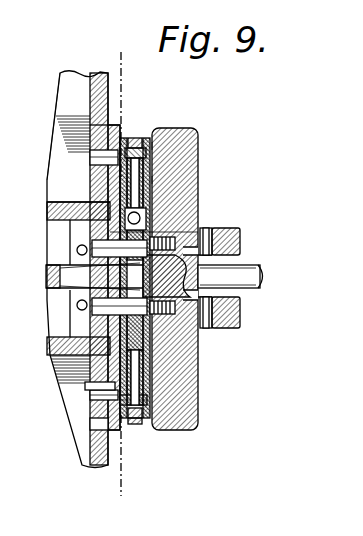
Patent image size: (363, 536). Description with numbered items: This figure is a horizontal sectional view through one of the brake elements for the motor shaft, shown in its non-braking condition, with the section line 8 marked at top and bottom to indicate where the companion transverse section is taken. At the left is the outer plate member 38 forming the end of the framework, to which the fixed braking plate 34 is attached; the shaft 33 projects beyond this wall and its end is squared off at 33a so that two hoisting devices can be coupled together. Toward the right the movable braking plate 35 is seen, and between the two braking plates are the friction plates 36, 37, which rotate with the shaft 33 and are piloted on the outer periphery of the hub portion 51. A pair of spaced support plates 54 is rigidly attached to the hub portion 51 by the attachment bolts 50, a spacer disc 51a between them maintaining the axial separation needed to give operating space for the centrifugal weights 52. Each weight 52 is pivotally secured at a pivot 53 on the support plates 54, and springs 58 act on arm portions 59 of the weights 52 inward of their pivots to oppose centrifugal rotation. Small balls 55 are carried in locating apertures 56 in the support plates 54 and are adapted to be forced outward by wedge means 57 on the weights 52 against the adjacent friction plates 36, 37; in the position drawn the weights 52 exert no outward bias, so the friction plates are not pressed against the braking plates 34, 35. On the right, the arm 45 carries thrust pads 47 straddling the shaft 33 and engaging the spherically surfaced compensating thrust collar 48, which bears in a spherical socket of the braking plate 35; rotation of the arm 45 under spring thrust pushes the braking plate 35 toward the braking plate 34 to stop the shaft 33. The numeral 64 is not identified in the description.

The section line 8— 8 is at (116, 60).
The outer plate member 38 is at (95, 96).
The braking plate 34 is at (100, 140).
The friction plate 36 is at (56, 126).
The locating apertures 56 is at (88, 157).
The springs 58 is at (122, 225).
The braking plate 35 is at (200, 127).
The weights 52 is at (136, 138).
The friction plate 37 is at (161, 122).
The pivots 53 is at (130, 150).
The balls 55 is at (130, 168).
The wedge means 57 is at (130, 182).
The arm portions 59 is at (142, 212).
The shaft 33 is at (246, 273).
The bolts 50 is at (130, 298).
The squared-off shaft end 33a is at (60, 294).
The spacer disc 51a is at (96, 247).
The thrust pads 47 is at (206, 232).
The arm 45 is at (232, 237).
The compensating thrust collar 48 is at (202, 312).
The hub portion 51 is at (190, 268).
The support plates 54 is at (96, 410).
The bolt head 64 is at (145, 416).